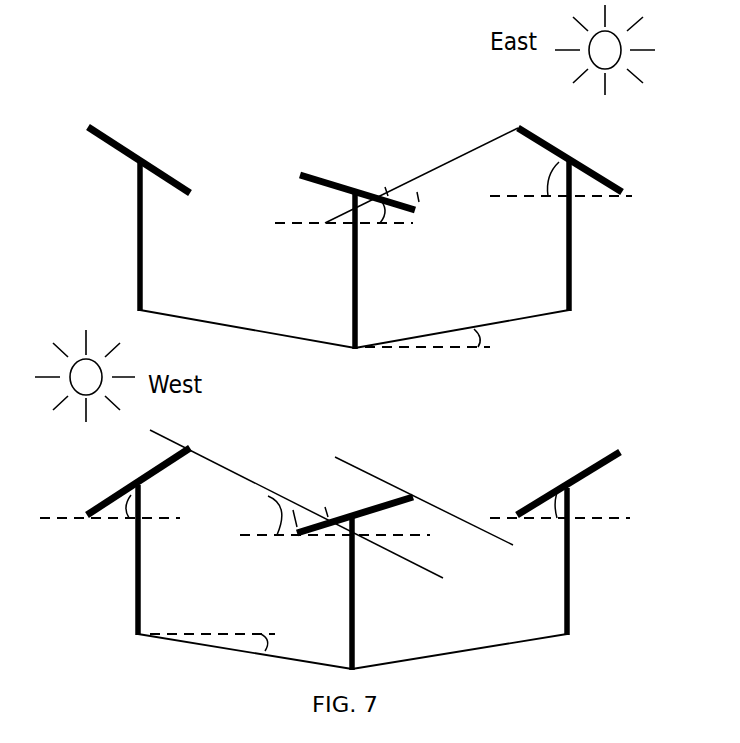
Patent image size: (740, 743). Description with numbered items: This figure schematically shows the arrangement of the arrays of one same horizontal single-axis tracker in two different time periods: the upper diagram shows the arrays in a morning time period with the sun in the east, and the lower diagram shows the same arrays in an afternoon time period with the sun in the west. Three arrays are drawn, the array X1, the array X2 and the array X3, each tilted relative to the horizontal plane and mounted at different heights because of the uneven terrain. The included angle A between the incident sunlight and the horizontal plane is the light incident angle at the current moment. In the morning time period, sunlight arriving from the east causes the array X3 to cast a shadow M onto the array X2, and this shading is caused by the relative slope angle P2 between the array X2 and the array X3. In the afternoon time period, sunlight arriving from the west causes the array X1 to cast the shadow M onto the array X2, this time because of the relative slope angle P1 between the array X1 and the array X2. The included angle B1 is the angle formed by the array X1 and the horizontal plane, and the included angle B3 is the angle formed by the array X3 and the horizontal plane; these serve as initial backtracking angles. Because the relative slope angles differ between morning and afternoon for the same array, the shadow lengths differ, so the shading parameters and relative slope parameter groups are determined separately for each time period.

The array X1 is at (145, 380).
The array X2 is at (326, 407).
The array X3 is at (563, 381).
The included angle A is at (335, 366).
The shadow part M is at (356, 352).
The initial backtracking angle B1 is at (110, 503).
The initial backtracking angle B3 is at (561, 340).
The relative slope angle P1 is at (223, 647).
The relative slope angle P2 is at (443, 342).